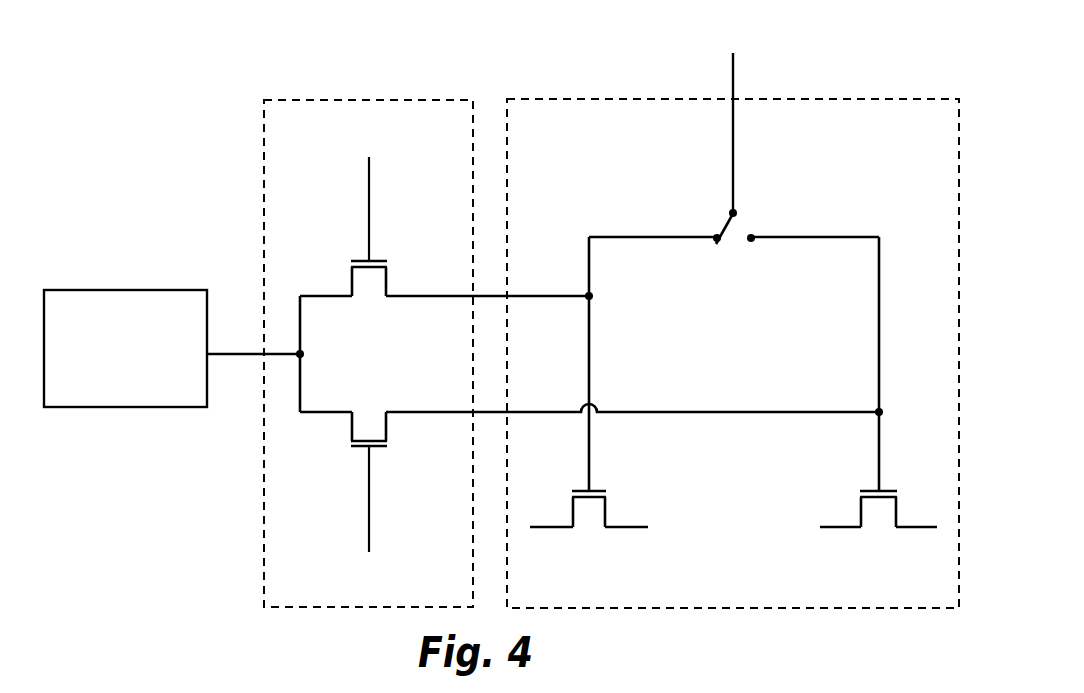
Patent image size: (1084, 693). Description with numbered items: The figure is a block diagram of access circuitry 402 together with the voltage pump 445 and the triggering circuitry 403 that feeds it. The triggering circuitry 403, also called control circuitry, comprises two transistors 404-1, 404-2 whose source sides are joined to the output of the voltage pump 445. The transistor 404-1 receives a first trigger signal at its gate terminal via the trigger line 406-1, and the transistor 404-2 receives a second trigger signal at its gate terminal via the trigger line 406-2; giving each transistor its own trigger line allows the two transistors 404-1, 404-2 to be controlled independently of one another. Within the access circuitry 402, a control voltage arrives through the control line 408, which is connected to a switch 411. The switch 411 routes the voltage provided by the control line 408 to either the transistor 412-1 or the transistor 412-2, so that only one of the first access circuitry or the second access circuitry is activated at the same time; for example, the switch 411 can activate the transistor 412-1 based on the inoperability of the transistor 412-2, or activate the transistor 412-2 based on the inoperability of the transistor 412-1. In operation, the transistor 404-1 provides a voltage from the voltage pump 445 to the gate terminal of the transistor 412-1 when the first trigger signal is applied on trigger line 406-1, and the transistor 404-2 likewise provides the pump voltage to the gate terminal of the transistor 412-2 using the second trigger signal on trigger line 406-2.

The voltage pump 445 is at (120, 296).
The triggering circuitry 403 is at (358, 104).
The access circuitry 402 is at (600, 104).
The trigger line 406-1 is at (369, 184).
The trigger line 406-2 is at (369, 524).
The transistor 404-1 is at (367, 284).
The transistor 404-2 is at (368, 424).
The control line 408 is at (733, 73).
The switch 411 is at (733, 242).
The transistor 412-1 is at (588, 515).
The transistor 412-2 is at (878, 515).